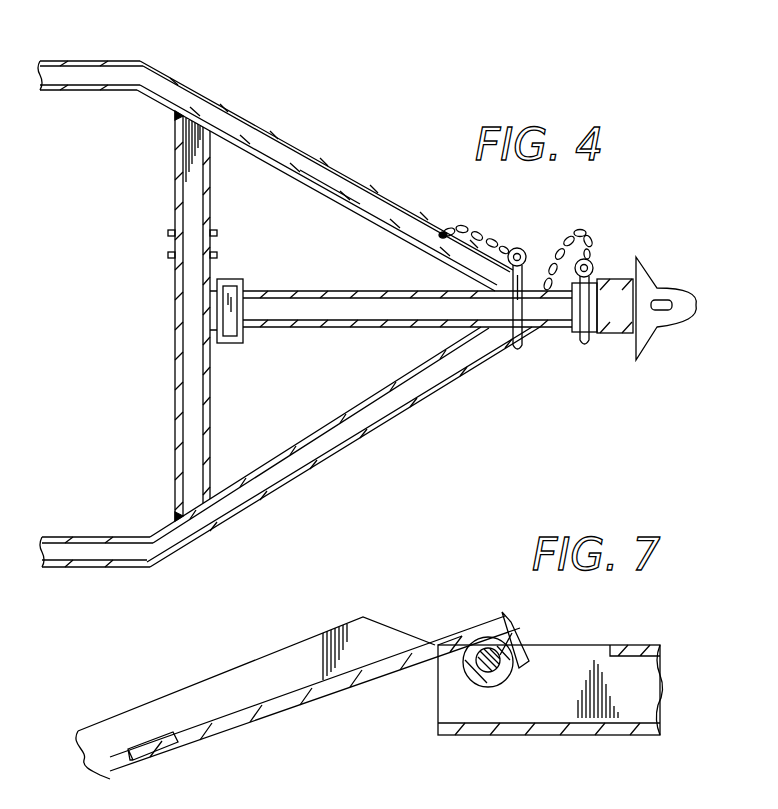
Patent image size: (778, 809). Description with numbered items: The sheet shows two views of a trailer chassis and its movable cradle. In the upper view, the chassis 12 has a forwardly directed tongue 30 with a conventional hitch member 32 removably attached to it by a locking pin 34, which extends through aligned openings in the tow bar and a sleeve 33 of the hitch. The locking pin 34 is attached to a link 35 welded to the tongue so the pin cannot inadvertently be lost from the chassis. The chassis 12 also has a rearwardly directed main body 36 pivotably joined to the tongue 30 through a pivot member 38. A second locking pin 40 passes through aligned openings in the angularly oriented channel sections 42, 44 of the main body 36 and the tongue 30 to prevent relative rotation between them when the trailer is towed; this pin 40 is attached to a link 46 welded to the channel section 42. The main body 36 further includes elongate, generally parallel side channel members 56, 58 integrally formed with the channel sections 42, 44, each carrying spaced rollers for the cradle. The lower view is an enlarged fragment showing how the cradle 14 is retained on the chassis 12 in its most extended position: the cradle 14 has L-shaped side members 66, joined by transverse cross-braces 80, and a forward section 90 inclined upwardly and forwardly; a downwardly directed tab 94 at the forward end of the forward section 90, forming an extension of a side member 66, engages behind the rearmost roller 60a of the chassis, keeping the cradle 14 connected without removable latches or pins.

In FIG. 4, the chassis 12 is at (289, 315).
In FIG. 7, the chassis 12 is at (516, 740).
In FIG. 7, the cradle 14 is at (456, 628).
In FIG. 4, the tongue 30 is at (320, 332).
In FIG. 4, the hitch member 32 is at (684, 282).
In FIG. 4, the sleeve 33 is at (620, 334).
In FIG. 4, the locking pin 34 is at (577, 302).
In FIG. 4, the link 35 is at (580, 232).
In FIG. 4, the main body 36 is at (165, 75).
In FIG. 4, the pivot member 38 is at (238, 280).
In FIG. 4, the second locking pin 40 is at (515, 305).
In FIG. 4, the channel section 42 is at (320, 180).
In FIG. 4, the channel section 44 is at (432, 372).
In FIG. 4, the link 46 is at (484, 238).
In FIG. 4, the side channel member 56 is at (92, 70).
In FIG. 4, the side channel member 58 is at (72, 548).
In FIG. 7, the rearmost roller 60a is at (505, 676).
In FIG. 7, the side member 66 is at (298, 697).
In FIG. 7, the cross-brace 80 is at (158, 732).
In FIG. 7, the forward section 90 is at (382, 670).
In FIG. 7, the tab 94 is at (518, 650).